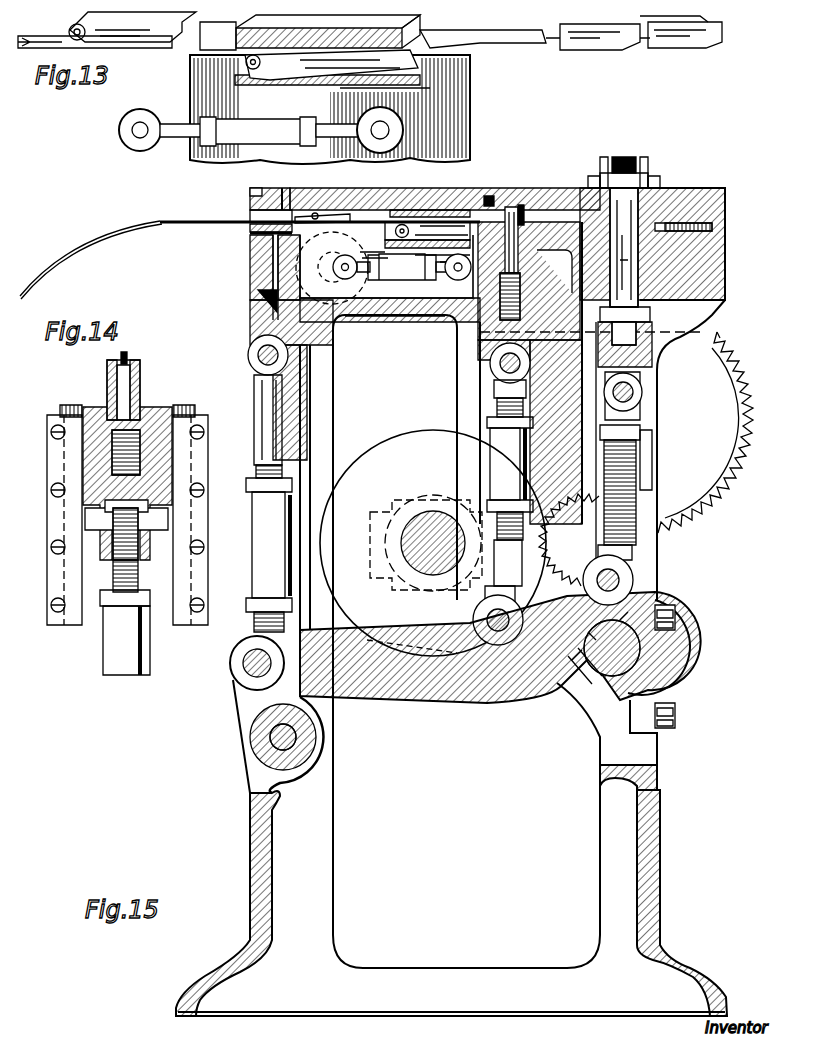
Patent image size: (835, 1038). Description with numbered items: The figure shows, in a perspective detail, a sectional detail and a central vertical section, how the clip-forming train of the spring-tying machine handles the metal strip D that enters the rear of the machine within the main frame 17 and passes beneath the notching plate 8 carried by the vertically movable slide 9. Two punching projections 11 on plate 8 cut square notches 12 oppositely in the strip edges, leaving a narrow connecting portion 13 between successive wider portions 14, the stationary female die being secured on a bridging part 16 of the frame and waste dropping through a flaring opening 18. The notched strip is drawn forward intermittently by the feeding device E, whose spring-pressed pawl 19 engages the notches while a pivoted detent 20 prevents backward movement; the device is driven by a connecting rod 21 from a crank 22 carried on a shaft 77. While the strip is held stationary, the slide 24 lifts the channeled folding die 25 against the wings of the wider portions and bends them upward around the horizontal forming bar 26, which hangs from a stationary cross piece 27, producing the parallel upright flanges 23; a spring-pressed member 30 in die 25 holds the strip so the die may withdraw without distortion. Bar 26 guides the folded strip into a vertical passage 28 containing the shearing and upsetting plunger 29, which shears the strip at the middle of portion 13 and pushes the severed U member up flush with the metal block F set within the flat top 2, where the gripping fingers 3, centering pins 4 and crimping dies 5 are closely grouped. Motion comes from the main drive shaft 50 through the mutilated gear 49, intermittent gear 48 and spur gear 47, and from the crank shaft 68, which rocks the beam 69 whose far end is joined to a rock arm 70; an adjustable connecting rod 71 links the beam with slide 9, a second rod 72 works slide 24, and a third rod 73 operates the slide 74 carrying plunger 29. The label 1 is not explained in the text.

In FIG. 13, the metal strip D is at (50, 40).
In FIG. 15, the metal strip D is at (158, 224).
In FIG. 13, the feeding device E is at (235, 82).
In FIG. 15, the feeding device E is at (408, 210).
In FIG. 15, the metal block F is at (595, 196).
In FIG. 13, the base 1 is at (370, 86).
In FIG. 15, the flat top 2 is at (722, 194).
In FIG. 15, the gripping fingers 3 is at (640, 166).
In FIG. 15, the centering pins 4 is at (655, 180).
In FIG. 15, the crimping dies 5 is at (624, 160).
In FIG. 15, the notching plate 8 is at (250, 220).
In FIG. 15, the slide 9 is at (300, 272).
In FIG. 15, the punching projections 11 is at (252, 203).
In FIG. 13, the square notches 12 is at (552, 42).
In FIG. 13, the narrow connecting portion 13 is at (482, 36).
In FIG. 13, the wider portions 14 is at (512, 46).
In FIG. 15, the bridging part 16 is at (252, 234).
In FIG. 15, the main frame 17 is at (358, 316).
In FIG. 15, the flaring opening 18 is at (273, 256).
In FIG. 13, the spring-pressed pawl 19 is at (331, 65).
In FIG. 15, the spring-pressed pawl 19 is at (438, 222).
In FIG. 13, the pivoted detent 20 is at (132, 27).
In FIG. 15, the pivoted detent 20 is at (318, 214).
In FIG. 13, the connecting rod 21 is at (261, 130).
In FIG. 15, the connecting rod 21 is at (402, 275).
In FIG. 15, the crank 22 is at (342, 256).
In FIG. 13, the upright flanges 23 is at (585, 52).
In FIG. 14, the vertically movable slide 24 is at (160, 415).
In FIG. 15, the vertically movable slide 24 is at (490, 338).
In FIG. 14, the channeled folding die 25 is at (142, 382).
In FIG. 15, the channeled folding die 25 is at (506, 208).
In FIG. 14, the horizontal forming bar 26 is at (128, 356).
In FIG. 15, the horizontal forming bar 26 is at (521, 205).
In FIG. 15, the stationary cross piece 27 is at (488, 196).
In FIG. 15, the vertical passage 28 is at (637, 215).
In FIG. 15, the shearing and upsetting plunger 29 is at (632, 287).
In FIG. 15, the spring-pressed member 30 is at (455, 278).
In FIG. 15, the spur gear 47 is at (738, 356).
In FIG. 15, the intermittent gear 48 is at (752, 396).
In FIG. 15, the mutilated gear 49 is at (544, 560).
In FIG. 15, the main drive shaft 50 is at (433, 543).
In FIG. 15, the crank shaft 68 is at (660, 672).
In FIG. 15, the rocking beam 69 is at (446, 697).
In FIG. 15, the rock arm 70 is at (246, 712).
In FIG. 15, the adjustable connecting rod 71 is at (250, 554).
In FIG. 14, the second adjustable connecting rod 72 is at (103, 656).
In FIG. 15, the second adjustable connecting rod 72 is at (492, 460).
In FIG. 15, the third adjustable connecting rod 73 is at (642, 457).
In FIG. 15, the slide 74 is at (655, 362).
In FIG. 15, the shaft 77 is at (256, 300).